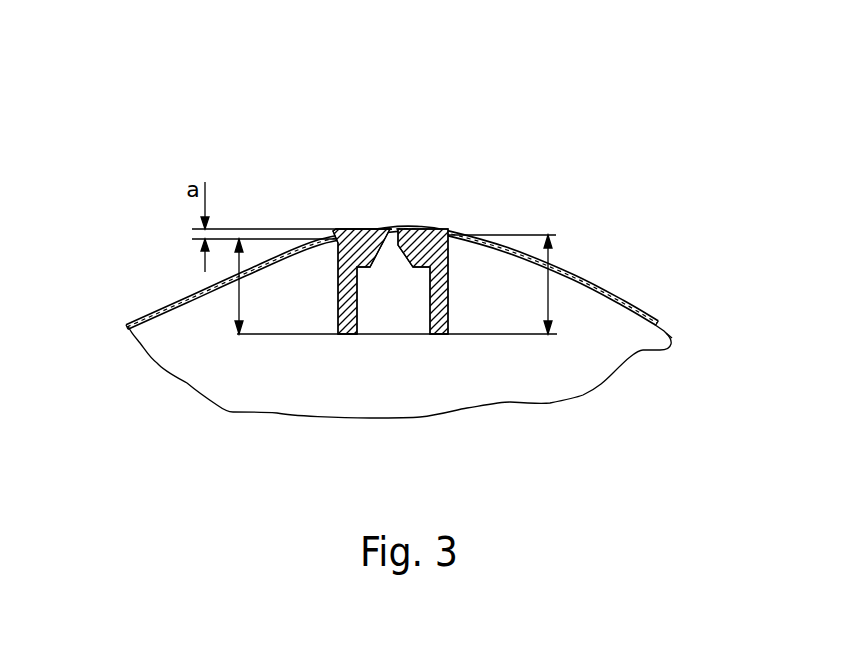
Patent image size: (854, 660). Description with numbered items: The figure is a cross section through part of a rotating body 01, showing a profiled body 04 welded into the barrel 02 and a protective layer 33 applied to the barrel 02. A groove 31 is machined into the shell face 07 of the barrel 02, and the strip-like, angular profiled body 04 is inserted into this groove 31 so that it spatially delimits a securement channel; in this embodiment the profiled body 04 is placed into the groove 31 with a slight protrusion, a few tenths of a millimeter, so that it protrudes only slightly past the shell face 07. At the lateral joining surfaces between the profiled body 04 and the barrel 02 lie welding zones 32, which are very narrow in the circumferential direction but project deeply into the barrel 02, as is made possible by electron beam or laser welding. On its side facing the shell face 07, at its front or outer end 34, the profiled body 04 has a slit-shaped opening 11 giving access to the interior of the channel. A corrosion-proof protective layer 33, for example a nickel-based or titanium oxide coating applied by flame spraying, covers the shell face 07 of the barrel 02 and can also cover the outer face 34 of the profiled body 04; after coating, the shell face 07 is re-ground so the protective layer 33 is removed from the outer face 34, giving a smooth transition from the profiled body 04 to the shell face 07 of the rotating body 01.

The rotating body 01 is at (386, 37).
The barrel 02 is at (562, 388).
The profiled body 04 is at (448, 250).
The shell face 07 is at (668, 333).
The slit-shaped opening 11 is at (392, 227).
The groove 31 is at (410, 337).
The welding zones 32 is at (263, 255).
The protective layer 33 is at (158, 300).
The front or outer end 34 is at (425, 230).